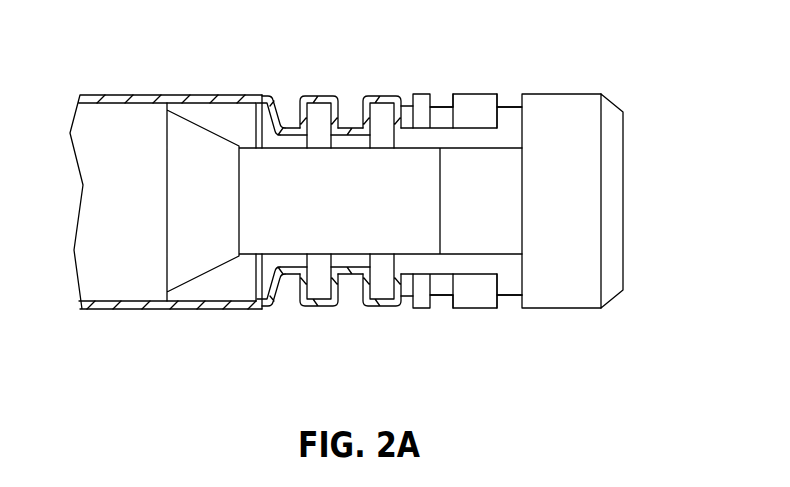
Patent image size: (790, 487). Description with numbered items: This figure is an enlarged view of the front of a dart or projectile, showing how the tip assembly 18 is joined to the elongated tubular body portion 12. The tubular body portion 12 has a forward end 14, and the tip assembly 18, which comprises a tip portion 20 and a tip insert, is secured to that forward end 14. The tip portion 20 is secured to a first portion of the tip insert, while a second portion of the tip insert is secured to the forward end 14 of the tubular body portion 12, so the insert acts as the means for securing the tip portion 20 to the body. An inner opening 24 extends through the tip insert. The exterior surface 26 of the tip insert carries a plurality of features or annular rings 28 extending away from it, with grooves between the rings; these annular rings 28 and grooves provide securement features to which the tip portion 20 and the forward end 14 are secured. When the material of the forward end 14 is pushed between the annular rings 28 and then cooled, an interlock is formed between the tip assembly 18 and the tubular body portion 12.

The elongated tubular body portion 12 is at (166, 308).
The forward end 14 is at (394, 308).
The tip assembly 18 is at (560, 326).
The tip portion 20 is at (610, 214).
The inner opening 24 is at (278, 262).
The exterior surface 26 is at (360, 347).
The annular rings 28 is at (507, 107).